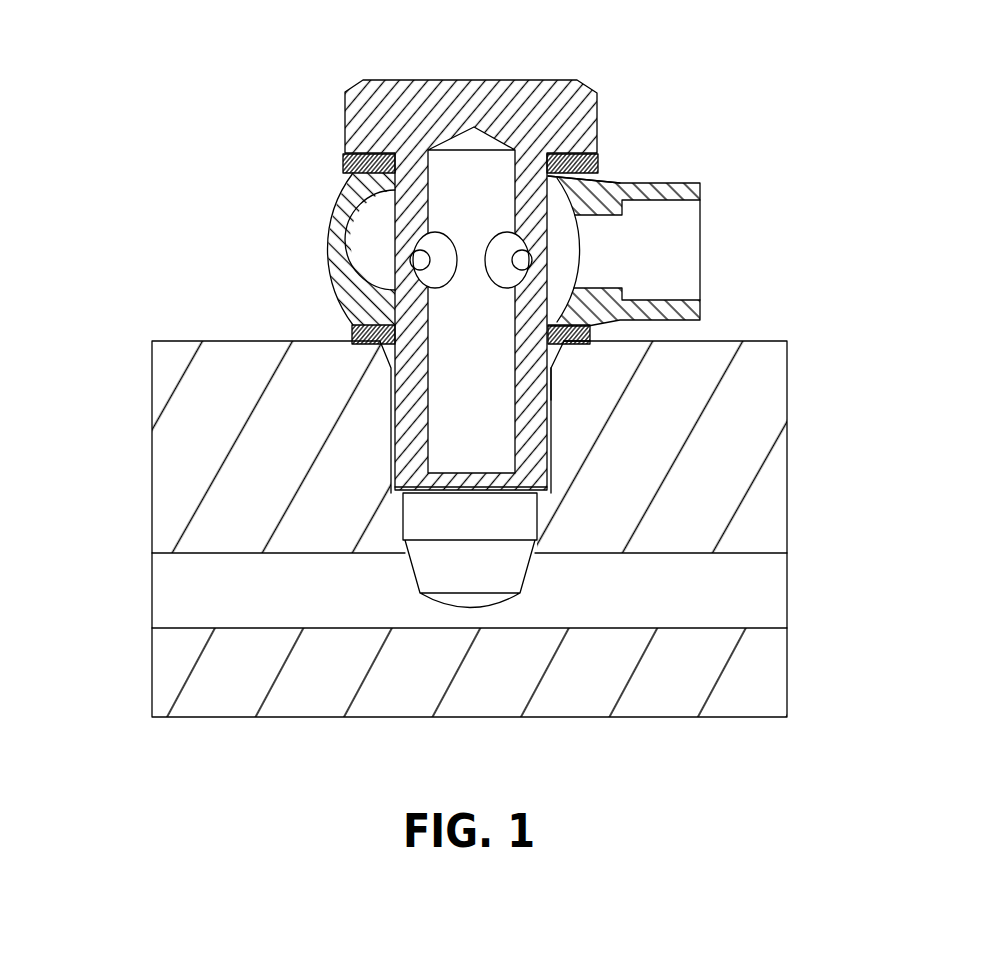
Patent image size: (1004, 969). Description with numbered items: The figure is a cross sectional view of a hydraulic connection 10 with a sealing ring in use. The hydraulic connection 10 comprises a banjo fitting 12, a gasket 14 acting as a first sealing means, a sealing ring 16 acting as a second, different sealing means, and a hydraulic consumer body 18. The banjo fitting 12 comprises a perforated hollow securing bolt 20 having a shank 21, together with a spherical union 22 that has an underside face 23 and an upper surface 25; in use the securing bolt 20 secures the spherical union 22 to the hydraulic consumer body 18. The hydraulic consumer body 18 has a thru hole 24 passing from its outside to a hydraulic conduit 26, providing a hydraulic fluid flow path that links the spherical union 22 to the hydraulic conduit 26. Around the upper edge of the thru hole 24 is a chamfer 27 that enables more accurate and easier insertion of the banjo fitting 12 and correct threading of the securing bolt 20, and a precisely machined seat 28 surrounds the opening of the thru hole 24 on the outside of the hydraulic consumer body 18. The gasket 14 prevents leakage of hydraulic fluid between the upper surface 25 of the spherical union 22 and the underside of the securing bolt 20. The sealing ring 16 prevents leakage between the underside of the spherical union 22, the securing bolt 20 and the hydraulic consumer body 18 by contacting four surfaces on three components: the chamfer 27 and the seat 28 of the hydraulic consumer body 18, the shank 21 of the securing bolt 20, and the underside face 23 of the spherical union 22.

The hydraulic connection 10 is at (520, 369).
The banjo fitting 12 is at (450, 255).
The gasket 14 is at (589, 235).
The sealing ring 16 is at (350, 332).
The hydraulic consumer body 18 is at (618, 459).
The securing bolt 20 is at (580, 82).
The shank 21 is at (333, 258).
The spherical union 22 is at (315, 250).
The underside face 23 is at (625, 297).
The thru hole 24 is at (523, 517).
The upper surface 25 is at (583, 187).
The hydraulic conduit 26 is at (618, 619).
The chamfer 27 is at (558, 370).
The seat 28 is at (560, 353).